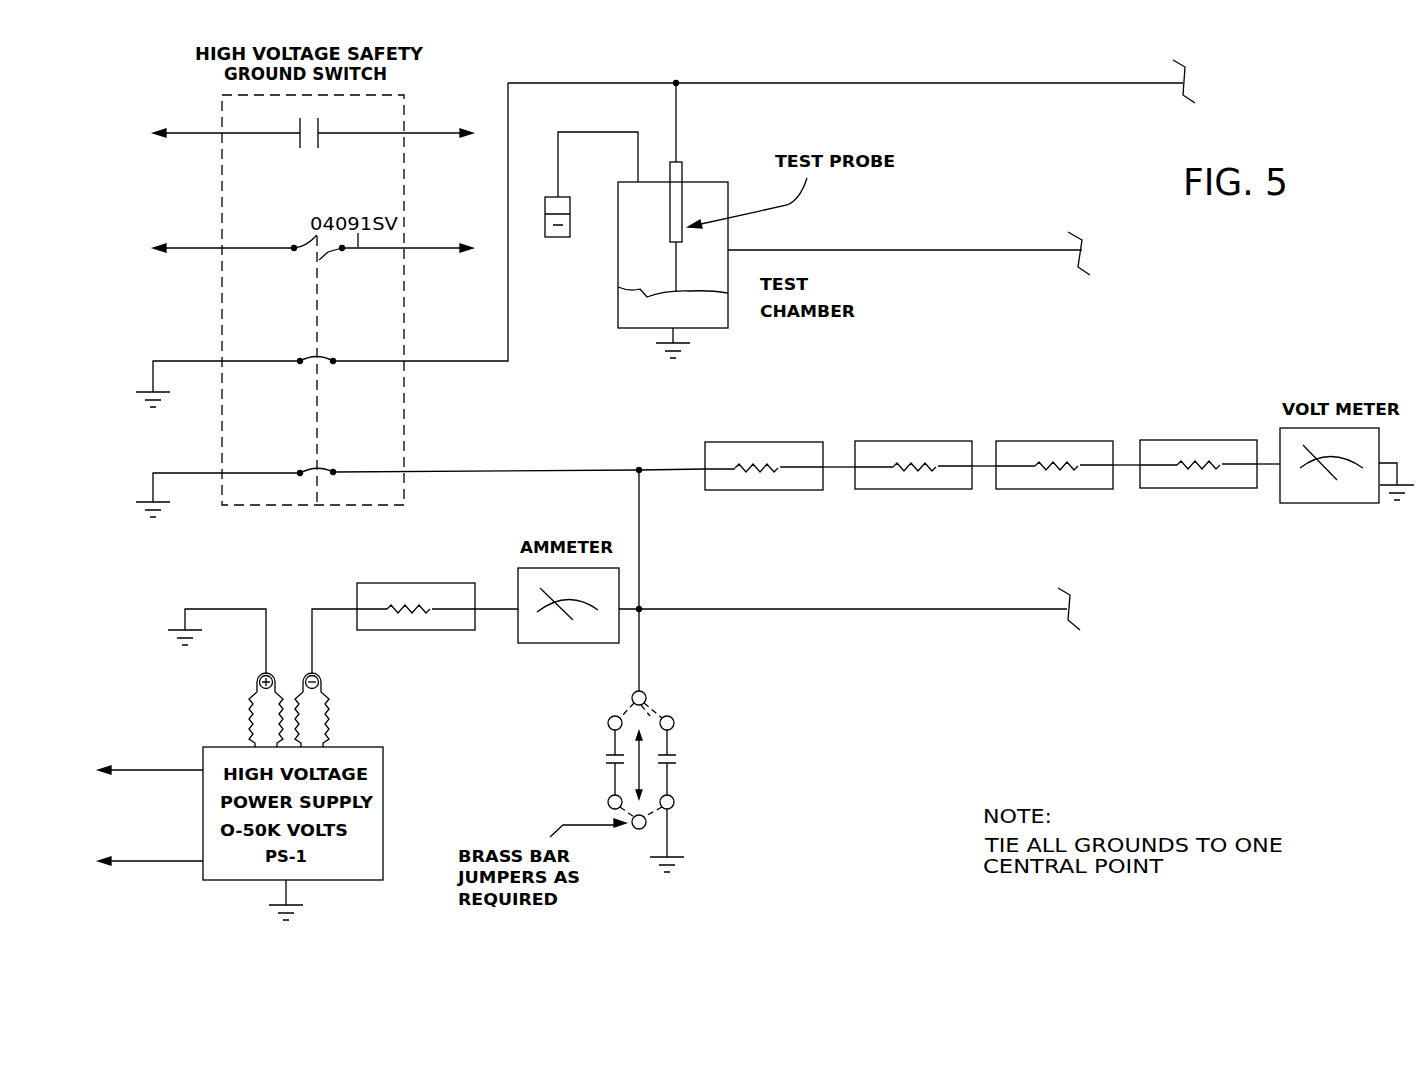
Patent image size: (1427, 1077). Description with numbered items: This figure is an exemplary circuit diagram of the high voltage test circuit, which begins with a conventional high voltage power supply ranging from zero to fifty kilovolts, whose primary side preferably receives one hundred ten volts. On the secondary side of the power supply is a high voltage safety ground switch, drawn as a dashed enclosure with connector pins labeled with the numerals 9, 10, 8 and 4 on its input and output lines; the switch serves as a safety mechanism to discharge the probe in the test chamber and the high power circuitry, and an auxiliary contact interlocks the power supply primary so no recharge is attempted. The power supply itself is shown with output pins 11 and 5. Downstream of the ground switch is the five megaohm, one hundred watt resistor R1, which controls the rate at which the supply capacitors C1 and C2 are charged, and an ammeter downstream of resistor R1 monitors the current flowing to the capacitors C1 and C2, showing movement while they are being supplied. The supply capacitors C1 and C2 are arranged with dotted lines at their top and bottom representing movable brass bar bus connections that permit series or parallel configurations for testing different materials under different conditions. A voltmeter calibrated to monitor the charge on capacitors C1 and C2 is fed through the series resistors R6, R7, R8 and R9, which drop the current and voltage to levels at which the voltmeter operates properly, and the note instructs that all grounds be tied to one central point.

The HVP-1 connector pin 9 is at (202, 137).
The HVP-1 connector pin 10 is at (430, 137).
The HVP-1 connector pin 8 is at (182, 250).
The HVP-1 connector pin 4 is at (428, 250).
The HVP-1 connector pin 11 is at (172, 797).
The HVP-1 connector pin 5 is at (177, 885).
The resistor R1 is at (416, 596).
The resistor R6 is at (764, 429).
The resistor R7 is at (913, 428).
The resistor R8 is at (1054, 428).
The resistor R9 is at (1198, 428).
The supply capacitor C1 is at (585, 761).
The supply capacitor C2 is at (701, 761).